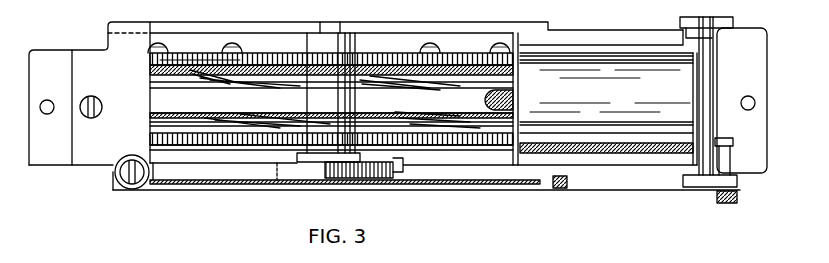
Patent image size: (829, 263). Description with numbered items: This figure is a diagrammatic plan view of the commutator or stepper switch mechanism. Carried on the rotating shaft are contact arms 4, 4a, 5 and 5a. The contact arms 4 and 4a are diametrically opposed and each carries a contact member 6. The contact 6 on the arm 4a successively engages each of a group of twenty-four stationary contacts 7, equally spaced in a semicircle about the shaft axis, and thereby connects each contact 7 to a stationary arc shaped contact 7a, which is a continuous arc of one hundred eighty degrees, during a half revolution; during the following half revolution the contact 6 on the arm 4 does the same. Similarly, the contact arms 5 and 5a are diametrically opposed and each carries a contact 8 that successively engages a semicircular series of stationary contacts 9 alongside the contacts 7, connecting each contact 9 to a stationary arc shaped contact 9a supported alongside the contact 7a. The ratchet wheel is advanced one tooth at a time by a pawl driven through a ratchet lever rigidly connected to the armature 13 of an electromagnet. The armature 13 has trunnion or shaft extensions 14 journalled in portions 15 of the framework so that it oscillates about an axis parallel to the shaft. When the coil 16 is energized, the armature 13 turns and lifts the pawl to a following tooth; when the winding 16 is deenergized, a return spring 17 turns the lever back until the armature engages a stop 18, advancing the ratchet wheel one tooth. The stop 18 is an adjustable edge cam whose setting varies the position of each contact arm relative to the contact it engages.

The contact arm 4 is at (262, 92).
The contact arm 4a is at (404, 110).
The contact arm 5 is at (238, 82).
The contact arm 5a is at (394, 80).
The contact member 6 is at (194, 140).
The stationary contacts 7 is at (240, 140).
The stationary arc shaped contact 7a is at (182, 80).
The contact 8 is at (202, 60).
The stationary contacts 9 is at (250, 62).
The stationary arc shaped contact 9a is at (496, 90).
The armature 13 is at (714, 80).
The trunnion or shaft extensions 14 is at (712, 34).
The framework portions 15 is at (690, 188).
The coil 16 is at (600, 62).
The return spring 17 is at (560, 188).
The stop 18 is at (739, 128).